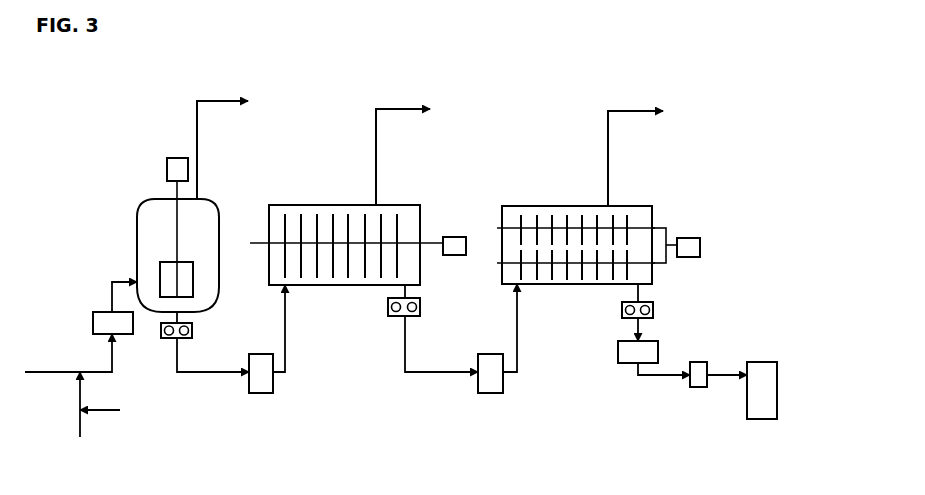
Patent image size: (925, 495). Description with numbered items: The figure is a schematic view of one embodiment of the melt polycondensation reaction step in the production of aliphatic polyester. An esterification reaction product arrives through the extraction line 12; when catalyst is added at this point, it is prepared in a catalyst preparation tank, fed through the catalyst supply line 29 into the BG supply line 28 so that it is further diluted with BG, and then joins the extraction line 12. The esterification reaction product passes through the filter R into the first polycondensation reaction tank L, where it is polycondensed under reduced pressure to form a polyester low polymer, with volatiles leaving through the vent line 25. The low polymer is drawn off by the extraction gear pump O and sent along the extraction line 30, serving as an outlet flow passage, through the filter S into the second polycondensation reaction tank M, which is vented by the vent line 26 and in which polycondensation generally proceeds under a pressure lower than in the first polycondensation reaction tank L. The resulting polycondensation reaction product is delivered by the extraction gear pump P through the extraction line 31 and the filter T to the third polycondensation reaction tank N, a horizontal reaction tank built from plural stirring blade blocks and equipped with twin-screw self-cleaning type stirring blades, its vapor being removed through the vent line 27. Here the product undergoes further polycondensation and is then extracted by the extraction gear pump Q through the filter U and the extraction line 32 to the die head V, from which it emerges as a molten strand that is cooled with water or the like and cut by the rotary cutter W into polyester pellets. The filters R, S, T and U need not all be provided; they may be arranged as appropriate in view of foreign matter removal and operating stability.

The extraction line 12 is at (41, 364).
The vent line 25 is at (220, 102).
The vent line 26 is at (400, 104).
The vent line 27 is at (630, 106).
The BG supply line 28 is at (78, 426).
The catalyst supply line 29 is at (106, 415).
The extraction line 30 is at (213, 378).
The extraction line 31 is at (447, 378).
The extraction line 32 is at (664, 380).
The first polycondensation reaction tank L is at (138, 226).
The second polycondensation reaction tank M is at (331, 203).
The third polycondensation reaction tank N is at (556, 203).
The extraction gear pump O is at (199, 331).
The extraction gear pump P is at (423, 308).
The extraction gear pump Q is at (660, 311).
The filter R is at (93, 323).
The filter S is at (260, 398).
The filter T is at (490, 398).
The filter U is at (616, 353).
The die head V is at (702, 392).
The rotary cutter W is at (783, 388).